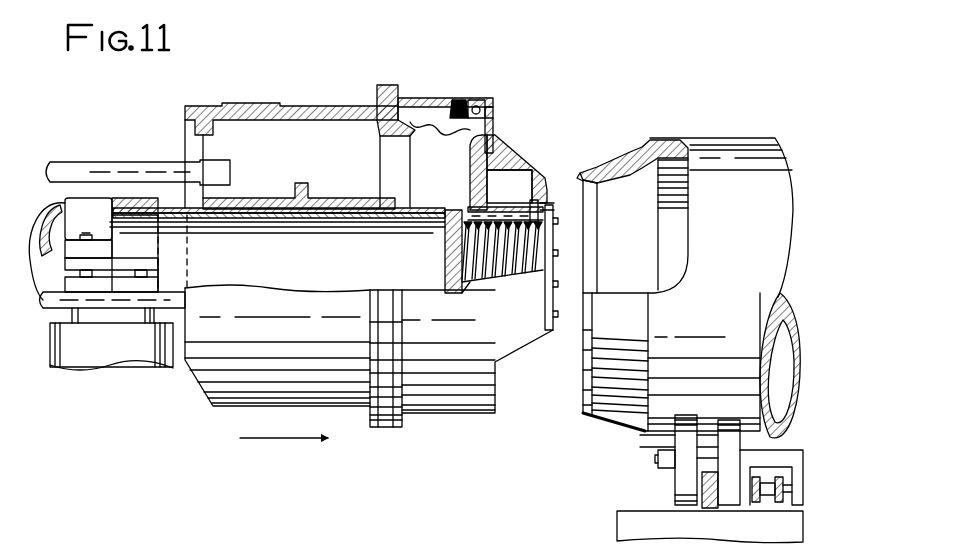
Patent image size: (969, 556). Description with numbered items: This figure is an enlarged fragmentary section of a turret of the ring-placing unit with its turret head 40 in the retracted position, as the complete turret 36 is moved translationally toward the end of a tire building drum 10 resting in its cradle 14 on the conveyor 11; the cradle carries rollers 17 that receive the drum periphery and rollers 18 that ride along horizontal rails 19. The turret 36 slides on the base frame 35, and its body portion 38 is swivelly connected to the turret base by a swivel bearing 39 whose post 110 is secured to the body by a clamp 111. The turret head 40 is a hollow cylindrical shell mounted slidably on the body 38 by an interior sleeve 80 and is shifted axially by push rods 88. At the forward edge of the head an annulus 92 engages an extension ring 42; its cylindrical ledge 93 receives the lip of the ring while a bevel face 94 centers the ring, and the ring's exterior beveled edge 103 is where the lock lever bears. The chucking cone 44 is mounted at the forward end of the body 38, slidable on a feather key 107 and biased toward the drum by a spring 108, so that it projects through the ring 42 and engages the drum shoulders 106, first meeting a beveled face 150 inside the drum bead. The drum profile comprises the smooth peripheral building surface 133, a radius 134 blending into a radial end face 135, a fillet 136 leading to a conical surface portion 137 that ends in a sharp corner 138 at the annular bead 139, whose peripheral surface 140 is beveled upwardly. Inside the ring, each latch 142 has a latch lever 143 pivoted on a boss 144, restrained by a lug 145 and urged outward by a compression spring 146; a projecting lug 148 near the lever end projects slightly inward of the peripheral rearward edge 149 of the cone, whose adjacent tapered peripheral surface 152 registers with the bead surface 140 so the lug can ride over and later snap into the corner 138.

The tire building drum 10 is at (586, 432).
The conveyor 11 is at (758, 505).
The cradle 14 is at (632, 498).
The rollers 17 is at (678, 482).
The rollers 18 is at (660, 460).
The horizontal rails 19 is at (716, 508).
The base frame 35 is at (630, 520).
The turret 36 is at (210, 420).
The body portion 38 is at (240, 220).
The swivel bearing 39 is at (85, 360).
The turret head 40 is at (322, 104).
The extension ring 42 is at (446, 424).
The chucking cone 44 is at (510, 322).
The interior sleeve 80 is at (316, 198).
The push rods 88 is at (100, 170).
The annulus 92 is at (380, 104).
The cylindrical ledge 93 is at (388, 104).
The bevel face 94 is at (410, 130).
The beveled edge 103 is at (392, 86).
The shoulders 106 is at (617, 175).
The feather key 107 is at (445, 252).
The spring 108 is at (472, 290).
The post 110 is at (97, 317).
The clamp 111 is at (125, 198).
The peripheral building surface 133 is at (736, 138).
The radius 134 is at (648, 152).
The end face 135 is at (641, 152).
The fillet 136 is at (642, 148).
The conical surface portion 137 is at (634, 150).
The sharp corner 138 is at (628, 152).
The annular bead 139 is at (578, 172).
The peripheral surface of the bead 140 is at (580, 172).
The latch 142 is at (442, 97).
The latch lever 143 is at (458, 100).
The boss 144 is at (486, 106).
The lug 145 is at (490, 119).
The compression spring 146 is at (474, 106).
The projecting lug 148 is at (470, 146).
The peripheral rearward edge 149 is at (466, 166).
The beveled face 150 is at (588, 232).
The peripheral surface of the cone 152 is at (493, 138).